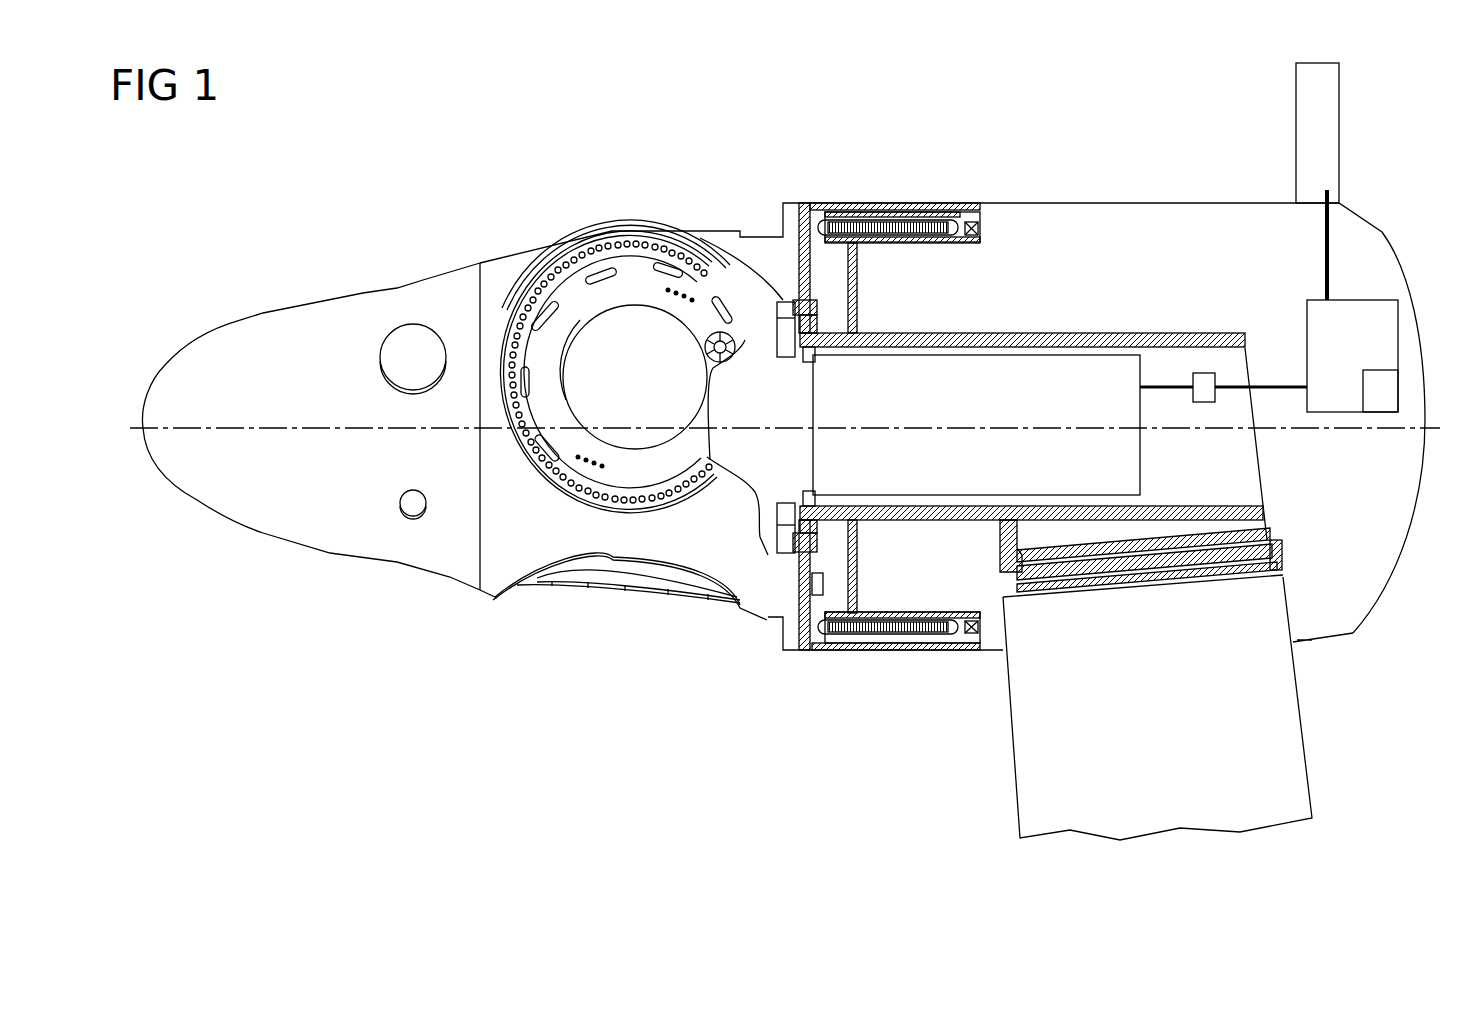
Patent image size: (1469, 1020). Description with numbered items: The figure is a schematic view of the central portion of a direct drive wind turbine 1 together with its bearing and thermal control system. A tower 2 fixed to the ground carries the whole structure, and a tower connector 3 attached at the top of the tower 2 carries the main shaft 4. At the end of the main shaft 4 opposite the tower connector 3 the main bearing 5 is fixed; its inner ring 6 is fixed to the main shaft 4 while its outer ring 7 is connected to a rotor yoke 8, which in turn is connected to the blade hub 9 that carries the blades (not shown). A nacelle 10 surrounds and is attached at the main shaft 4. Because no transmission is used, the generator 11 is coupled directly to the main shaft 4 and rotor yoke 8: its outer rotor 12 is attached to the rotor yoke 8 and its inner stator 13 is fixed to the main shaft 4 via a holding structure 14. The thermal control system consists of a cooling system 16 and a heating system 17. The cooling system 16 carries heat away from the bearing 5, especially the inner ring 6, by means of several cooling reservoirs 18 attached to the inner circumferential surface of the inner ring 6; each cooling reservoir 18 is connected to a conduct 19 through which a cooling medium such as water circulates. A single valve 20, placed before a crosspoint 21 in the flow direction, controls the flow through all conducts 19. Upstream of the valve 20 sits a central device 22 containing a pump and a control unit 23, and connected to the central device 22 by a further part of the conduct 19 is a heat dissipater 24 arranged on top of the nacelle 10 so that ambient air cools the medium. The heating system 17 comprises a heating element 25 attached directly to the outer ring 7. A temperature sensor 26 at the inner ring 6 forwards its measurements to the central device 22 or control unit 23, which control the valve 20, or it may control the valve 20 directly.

The wind turbine 1 is at (1384, 713).
The tower 2 is at (1296, 775).
The tower connector 3 is at (1262, 522).
The main shaft 4 is at (1248, 334).
The bearing 5 is at (766, 576).
The inner ring 6 is at (818, 322).
The outer ring 7 is at (818, 312).
The rotor yoke 8 is at (806, 203).
The blade hub 9 is at (500, 272).
The nacelle 10 is at (1352, 623).
The generator 11 is at (982, 182).
The outer rotor 12 is at (931, 203).
The inner stator 13 is at (962, 245).
The holding structure 14 is at (857, 278).
The cooling system 16 is at (1170, 248).
The heating system 17 is at (782, 138).
The cooling reservoir 18 is at (808, 362).
The conduct 19 is at (1325, 243).
The valve 20 is at (1204, 402).
The crosspoint 21 is at (1140, 387).
The central device 22 is at (1357, 300).
The control unit 23 is at (1380, 405).
The heat dissipater 24 is at (1340, 127).
The heating element 25 is at (778, 300).
The temperature sensor 26 is at (823, 585).